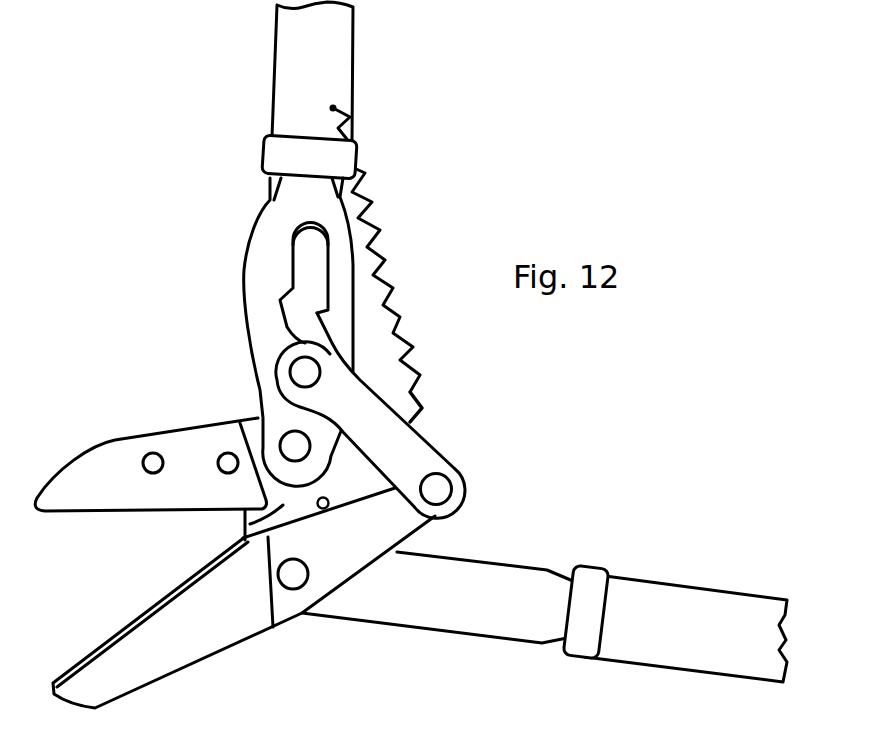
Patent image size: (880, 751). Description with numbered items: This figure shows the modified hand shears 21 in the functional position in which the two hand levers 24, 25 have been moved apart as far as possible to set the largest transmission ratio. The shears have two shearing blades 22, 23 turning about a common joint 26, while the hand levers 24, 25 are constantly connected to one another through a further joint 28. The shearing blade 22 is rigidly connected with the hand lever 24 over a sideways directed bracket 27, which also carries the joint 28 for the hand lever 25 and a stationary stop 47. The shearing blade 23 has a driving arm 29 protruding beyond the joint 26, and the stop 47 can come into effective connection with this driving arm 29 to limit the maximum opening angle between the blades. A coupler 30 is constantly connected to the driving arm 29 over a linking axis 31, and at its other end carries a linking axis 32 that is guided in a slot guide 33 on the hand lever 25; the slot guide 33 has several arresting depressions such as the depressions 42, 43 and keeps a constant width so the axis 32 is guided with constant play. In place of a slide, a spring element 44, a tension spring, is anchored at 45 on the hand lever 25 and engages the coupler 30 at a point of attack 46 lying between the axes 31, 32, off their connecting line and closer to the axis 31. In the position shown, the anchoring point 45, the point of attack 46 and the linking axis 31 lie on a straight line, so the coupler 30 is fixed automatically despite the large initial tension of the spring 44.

The hand shears 21 is at (172, 412).
The shearing blade 22 is at (113, 478).
The shearing blade 23 is at (170, 643).
The hand lever 24 is at (673, 605).
The hand lever 25 is at (333, 48).
The common joint 26 is at (293, 580).
The bracket 27 is at (248, 524).
The joint 28 is at (288, 447).
The driving arm 29 is at (390, 522).
The coupler 30 is at (407, 448).
The linking axis 31 is at (438, 490).
The linking axis 32 is at (302, 373).
The slot guide 33 is at (308, 275).
The arresting depression 42 is at (280, 298).
The arresting depression 43 is at (297, 230).
The spring element 44 is at (390, 262).
The anchoring point 45 is at (337, 108).
The point of attack 46 is at (426, 410).
The stationary stop 47 is at (326, 509).